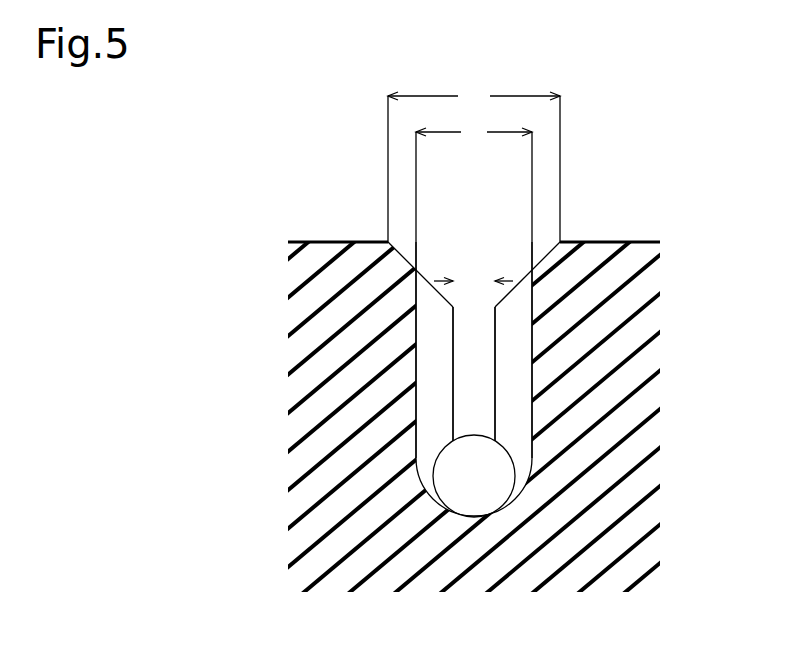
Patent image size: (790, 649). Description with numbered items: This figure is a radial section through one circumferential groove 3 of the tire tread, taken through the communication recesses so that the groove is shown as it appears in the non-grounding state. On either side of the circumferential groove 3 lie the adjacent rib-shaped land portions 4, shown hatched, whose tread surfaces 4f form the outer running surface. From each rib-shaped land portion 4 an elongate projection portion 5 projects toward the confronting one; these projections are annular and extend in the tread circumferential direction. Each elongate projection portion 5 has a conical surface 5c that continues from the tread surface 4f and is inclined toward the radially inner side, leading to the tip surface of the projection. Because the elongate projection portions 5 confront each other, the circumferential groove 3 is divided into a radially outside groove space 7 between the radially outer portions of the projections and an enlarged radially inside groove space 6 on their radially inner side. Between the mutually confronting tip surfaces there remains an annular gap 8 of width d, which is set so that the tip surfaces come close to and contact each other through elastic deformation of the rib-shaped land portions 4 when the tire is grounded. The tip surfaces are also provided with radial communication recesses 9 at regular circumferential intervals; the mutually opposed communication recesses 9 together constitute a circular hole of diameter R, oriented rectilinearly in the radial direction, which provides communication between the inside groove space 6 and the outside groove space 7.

The circumferential groove 3 is at (476, 222).
The rib-shaped land portion 4 is at (469, 324).
The tread surface 4f is at (315, 241).
The elongate projection portion 5 is at (475, 350).
The conical surface 5c is at (426, 275).
The radially inside groove space 6 is at (465, 488).
The radially outside groove space 7 is at (482, 264).
The annular gap 8 is at (473, 402).
The communication recess 9 is at (438, 390).